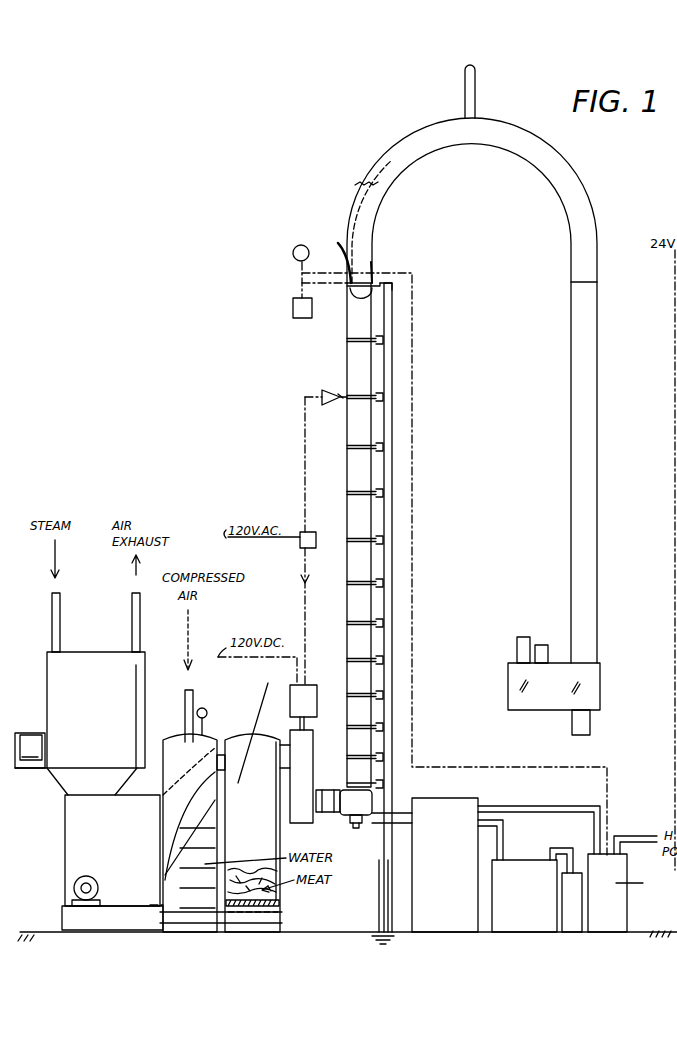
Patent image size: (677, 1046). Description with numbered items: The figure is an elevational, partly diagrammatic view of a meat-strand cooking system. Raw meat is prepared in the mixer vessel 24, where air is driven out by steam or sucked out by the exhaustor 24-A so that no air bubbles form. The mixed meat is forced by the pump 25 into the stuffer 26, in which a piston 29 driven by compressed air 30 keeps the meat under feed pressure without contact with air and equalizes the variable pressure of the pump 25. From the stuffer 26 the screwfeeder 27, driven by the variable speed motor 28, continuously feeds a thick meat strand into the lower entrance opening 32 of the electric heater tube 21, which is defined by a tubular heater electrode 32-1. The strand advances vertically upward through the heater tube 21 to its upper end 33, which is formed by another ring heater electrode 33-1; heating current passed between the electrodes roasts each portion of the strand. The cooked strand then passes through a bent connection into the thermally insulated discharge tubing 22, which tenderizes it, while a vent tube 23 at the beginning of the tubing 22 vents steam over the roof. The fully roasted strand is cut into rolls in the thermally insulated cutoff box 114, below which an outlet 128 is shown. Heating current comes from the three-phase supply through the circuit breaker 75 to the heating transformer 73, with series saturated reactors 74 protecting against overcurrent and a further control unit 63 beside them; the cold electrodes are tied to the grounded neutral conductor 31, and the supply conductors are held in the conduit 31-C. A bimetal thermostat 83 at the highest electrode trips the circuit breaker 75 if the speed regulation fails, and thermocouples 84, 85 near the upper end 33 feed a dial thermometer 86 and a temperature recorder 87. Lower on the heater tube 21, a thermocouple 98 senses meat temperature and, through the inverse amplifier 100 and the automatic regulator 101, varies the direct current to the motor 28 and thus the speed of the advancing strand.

The electric heater tube 21 is at (347, 470).
The discharge tubing 22 is at (570, 298).
The vent tube 23 is at (465, 85).
The mixer vessel 24 is at (47, 705).
The exhaustor 24-A is at (132, 598).
The pump 25 is at (65, 857).
The stuffer 26 is at (240, 733).
The screwfeeder 27 is at (312, 782).
The variable speed motor 28 is at (313, 690).
The piston 29 is at (279, 903).
The compressed air 30 is at (193, 690).
The grounded neutral conductor 31 is at (371, 896).
The conduit 31-C is at (392, 602).
The lower entrance opening 32 is at (374, 800).
The heater electrode 32-1 is at (409, 804).
The upper end of heater tube 33 is at (364, 298).
The heater electrode 33-1 is at (433, 283).
The control unit 63 is at (572, 902).
The heating transformer 73 is at (445, 865).
The series saturated reactors 74 is at (528, 923).
The circuit breaker 75 is at (614, 919).
The bimetal thermostat 83 is at (374, 280).
The thermocouple 84 is at (340, 245).
The thermocouple 85 is at (350, 290).
The dial thermometer 86 is at (287, 254).
The temperature recorder 87 is at (289, 308).
The electric thermocouple 98 is at (340, 392).
The inverse amplifier 100 is at (329, 407).
The automatic regulator 101 is at (304, 548).
The cutoff box 114 is at (508, 692).
The outlet 128 is at (572, 732).